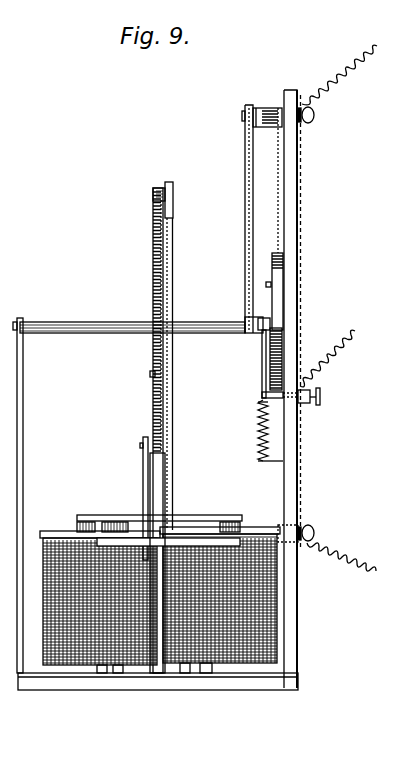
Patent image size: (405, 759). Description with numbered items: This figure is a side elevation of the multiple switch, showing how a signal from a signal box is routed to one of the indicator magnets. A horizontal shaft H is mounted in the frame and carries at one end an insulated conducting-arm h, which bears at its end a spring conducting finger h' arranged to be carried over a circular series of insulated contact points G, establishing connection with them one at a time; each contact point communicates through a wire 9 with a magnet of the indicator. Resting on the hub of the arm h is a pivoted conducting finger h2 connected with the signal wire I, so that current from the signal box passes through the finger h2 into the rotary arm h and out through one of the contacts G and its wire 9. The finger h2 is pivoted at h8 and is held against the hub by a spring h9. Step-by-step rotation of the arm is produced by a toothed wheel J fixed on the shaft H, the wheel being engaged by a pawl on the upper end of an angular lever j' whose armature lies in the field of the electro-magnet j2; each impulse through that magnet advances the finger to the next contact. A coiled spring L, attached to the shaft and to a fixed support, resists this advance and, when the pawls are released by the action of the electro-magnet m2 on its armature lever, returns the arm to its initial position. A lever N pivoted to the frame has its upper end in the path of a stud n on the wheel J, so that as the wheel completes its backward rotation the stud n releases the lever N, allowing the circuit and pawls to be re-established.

The spring conducting finger h' is at (267, 108).
The insulated contact points G is at (280, 124).
The conductor wire 9 is at (339, 75).
The insulated conducting-arm h is at (243, 219).
The coiled spring L is at (277, 304).
The pivoted conducting finger h2 is at (262, 352).
The pivot h8 is at (258, 403).
The spring h9 is at (259, 436).
The signal wire I is at (326, 371).
The horizontal shaft H is at (104, 318).
The wheel J is at (156, 302).
The stud n is at (150, 377).
The lever N is at (150, 412).
The angular lever j' is at (159, 506).
The electro-magnet j2 is at (46, 605).
The electro-magnet m2 is at (176, 665).